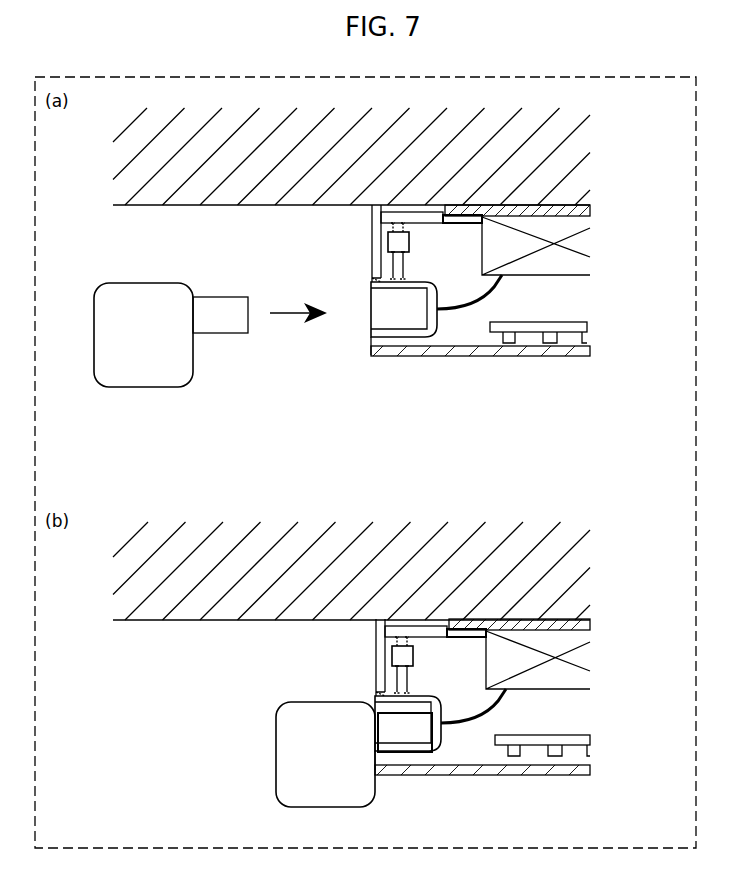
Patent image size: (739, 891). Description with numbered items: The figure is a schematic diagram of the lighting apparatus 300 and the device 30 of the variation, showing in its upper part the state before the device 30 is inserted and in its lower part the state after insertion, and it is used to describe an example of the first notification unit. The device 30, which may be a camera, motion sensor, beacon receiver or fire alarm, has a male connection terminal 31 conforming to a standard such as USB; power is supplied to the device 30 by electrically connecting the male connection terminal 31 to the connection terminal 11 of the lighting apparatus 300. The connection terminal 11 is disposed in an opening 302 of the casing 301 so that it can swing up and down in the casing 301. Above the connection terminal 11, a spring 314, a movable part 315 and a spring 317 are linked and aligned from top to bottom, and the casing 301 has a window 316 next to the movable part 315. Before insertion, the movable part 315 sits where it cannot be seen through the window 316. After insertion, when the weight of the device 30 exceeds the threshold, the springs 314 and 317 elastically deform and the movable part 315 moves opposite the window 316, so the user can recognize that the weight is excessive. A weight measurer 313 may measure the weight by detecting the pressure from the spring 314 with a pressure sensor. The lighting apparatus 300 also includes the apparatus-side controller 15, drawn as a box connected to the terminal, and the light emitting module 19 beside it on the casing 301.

The lighting apparatus 300 is at (601, 203).
The weight measurer 313 is at (375, 211).
The spring 314 is at (371, 233).
The movable part 315 is at (378, 239).
The window 316 is at (386, 257).
The spring 317 is at (371, 278).
The connection terminal 11 is at (371, 306).
The opening 302 is at (371, 352).
The casing 301 is at (407, 358).
The apparatus-side controller 15 is at (575, 270).
The light emitting module 19 is at (588, 325).
The device 30 is at (150, 282).
The male connection terminal 31 is at (226, 326).